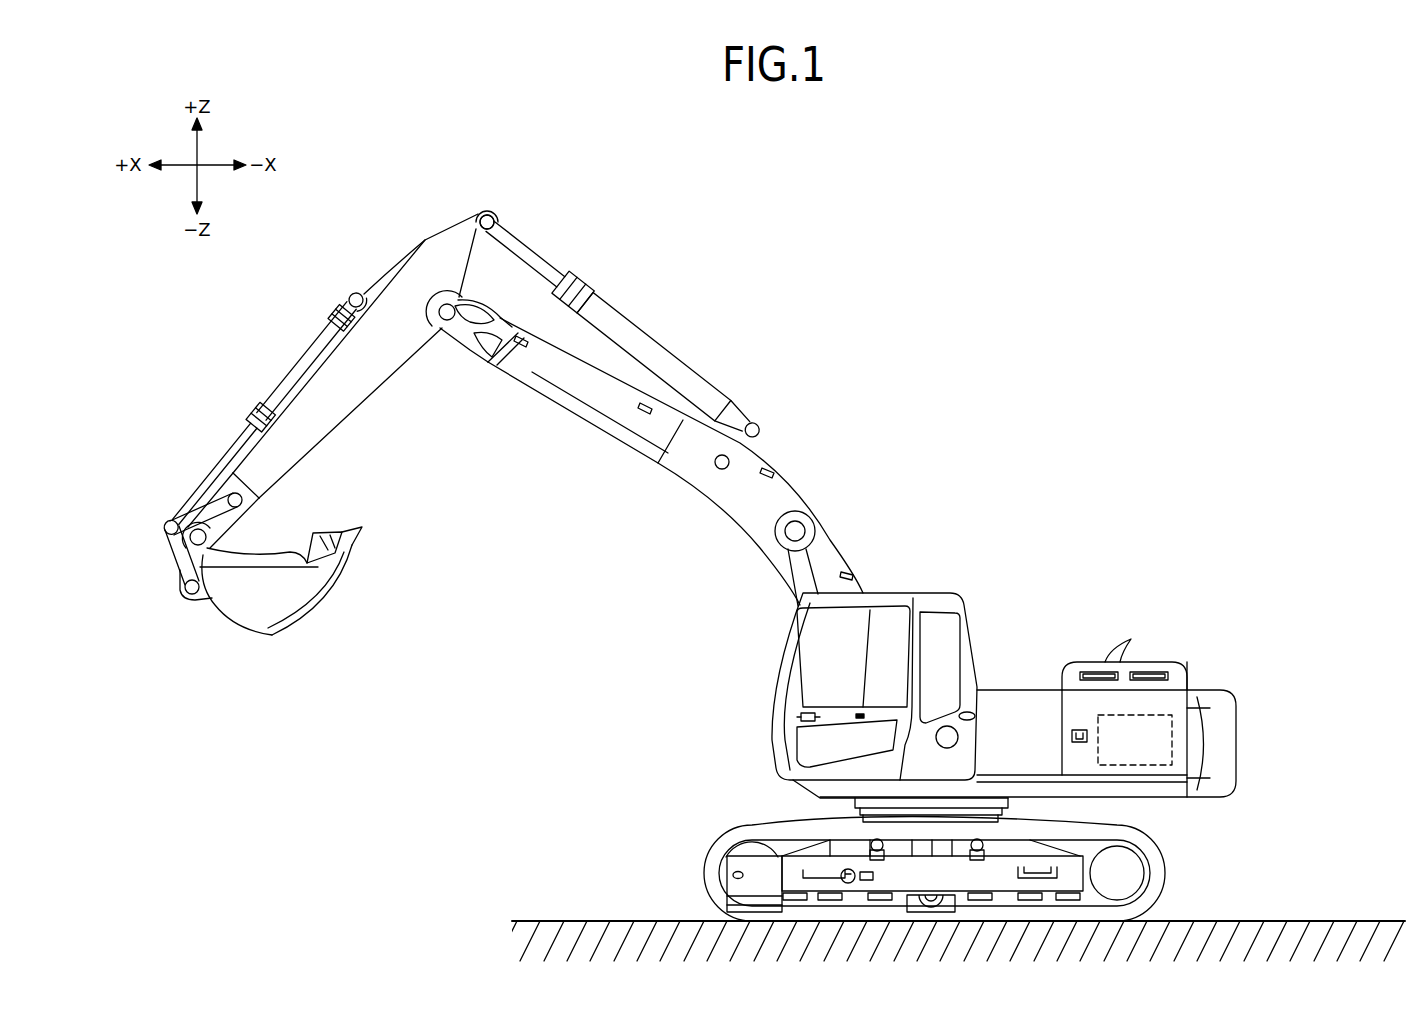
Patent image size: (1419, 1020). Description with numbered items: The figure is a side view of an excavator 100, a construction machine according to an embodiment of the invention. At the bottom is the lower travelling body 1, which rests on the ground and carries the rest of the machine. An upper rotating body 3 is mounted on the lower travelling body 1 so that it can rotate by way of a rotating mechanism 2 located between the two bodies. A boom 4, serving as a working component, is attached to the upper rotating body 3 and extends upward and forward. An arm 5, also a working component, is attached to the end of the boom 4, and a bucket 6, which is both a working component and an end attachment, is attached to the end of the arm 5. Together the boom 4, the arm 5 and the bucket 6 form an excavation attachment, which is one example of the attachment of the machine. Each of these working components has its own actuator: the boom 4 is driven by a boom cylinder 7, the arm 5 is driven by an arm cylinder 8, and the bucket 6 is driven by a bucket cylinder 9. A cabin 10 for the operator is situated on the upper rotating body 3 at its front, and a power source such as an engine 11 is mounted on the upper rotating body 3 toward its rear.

The excavator 100 is at (1014, 372).
The lower travelling body 1 is at (703, 873).
The rotating mechanism 2 is at (1008, 808).
The upper rotating body 3 is at (1022, 690).
The boom 4 is at (695, 483).
The arm 5 is at (362, 388).
The bucket 6 is at (258, 626).
The boom cylinder 7 is at (807, 570).
The arm cylinder 8 is at (682, 373).
The bucket cylinder 9 is at (298, 373).
The cabin 10 is at (953, 592).
The engine 11 is at (1165, 705).